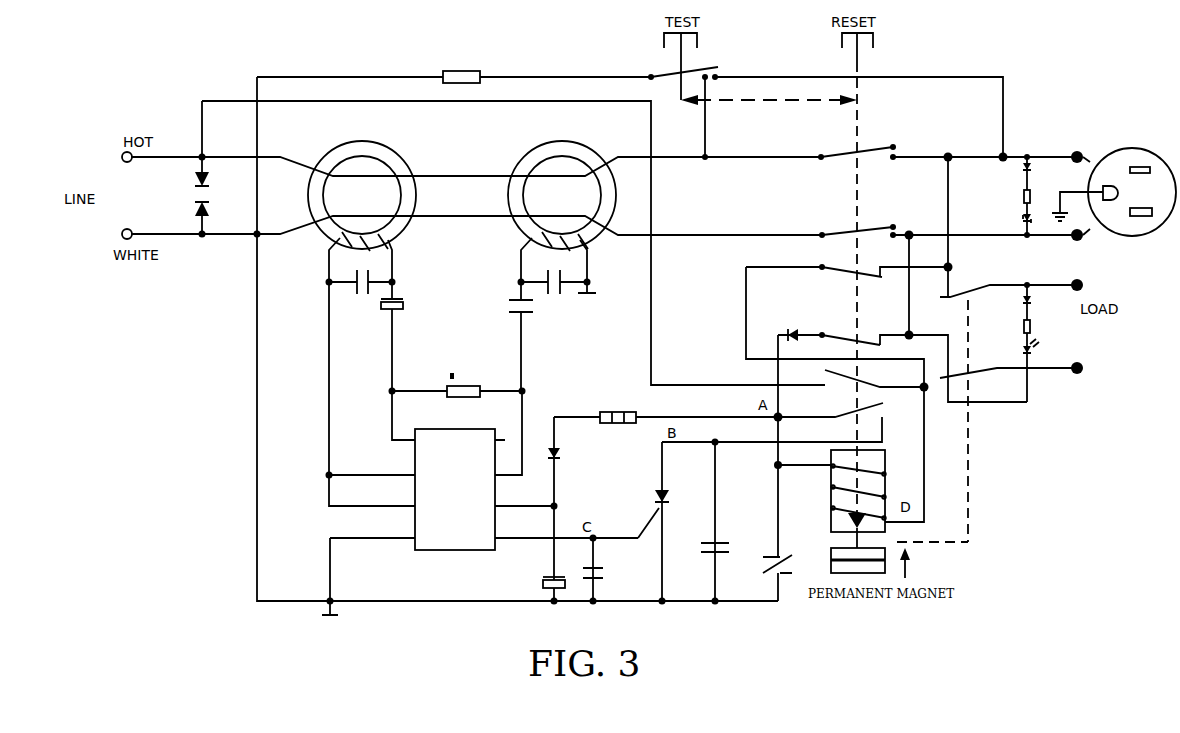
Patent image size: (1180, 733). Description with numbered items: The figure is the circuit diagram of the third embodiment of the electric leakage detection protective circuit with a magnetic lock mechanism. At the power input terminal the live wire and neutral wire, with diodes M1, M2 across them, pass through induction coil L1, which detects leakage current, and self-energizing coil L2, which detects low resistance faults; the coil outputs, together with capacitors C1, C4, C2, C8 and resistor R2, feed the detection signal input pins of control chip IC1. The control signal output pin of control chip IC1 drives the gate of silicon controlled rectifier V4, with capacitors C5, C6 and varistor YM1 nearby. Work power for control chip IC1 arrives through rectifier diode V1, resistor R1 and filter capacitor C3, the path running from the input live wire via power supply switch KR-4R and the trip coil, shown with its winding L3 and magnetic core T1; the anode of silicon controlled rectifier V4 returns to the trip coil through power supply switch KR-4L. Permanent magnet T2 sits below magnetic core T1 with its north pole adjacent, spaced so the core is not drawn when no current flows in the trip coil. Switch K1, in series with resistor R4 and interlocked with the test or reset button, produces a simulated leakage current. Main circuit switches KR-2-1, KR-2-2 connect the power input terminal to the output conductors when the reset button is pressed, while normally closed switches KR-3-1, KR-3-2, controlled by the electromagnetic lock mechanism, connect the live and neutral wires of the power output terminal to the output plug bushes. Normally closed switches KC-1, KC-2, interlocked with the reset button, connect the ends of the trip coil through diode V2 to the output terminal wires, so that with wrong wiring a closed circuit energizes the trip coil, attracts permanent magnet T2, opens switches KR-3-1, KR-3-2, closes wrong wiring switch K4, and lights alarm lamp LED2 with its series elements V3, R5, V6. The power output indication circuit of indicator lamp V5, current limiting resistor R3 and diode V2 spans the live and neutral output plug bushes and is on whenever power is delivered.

The diode M1 is at (219, 172).
The diode M2 is at (219, 217).
The resistor R4 is at (461, 67).
The switch K1 is at (699, 107).
The induction coil L1 is at (362, 188).
The self-energizing coil L2 is at (562, 188).
The capacitor C1 is at (361, 266).
The capacitor C4 is at (405, 336).
The capacitor C2 is at (557, 266).
The capacitor C8 is at (534, 336).
The resistor R2 is at (457, 383).
The control chip IC1 is at (526, 489).
The rectifier diode V1 is at (563, 511).
The filter capacitor C3 is at (540, 586).
The resistor R1 is at (666, 408).
The capacitor C5 is at (606, 570).
The silicon controlled rectifier V4 is at (644, 523).
The capacitor C6 is at (701, 523).
The metal oxide varistor YM1 (MOV) YM1 is at (766, 547).
The solenoid coil L3 (SOL) L3 is at (830, 491).
The magnetic core T1 is at (847, 517).
The permanent magnet T2 is at (846, 563).
The wrong wiring switch K4 is at (847, 394).
The power supply switch KR-4R is at (874, 375).
The power supply switch KR-4L is at (830, 419).
The normally closed switch KC-1 is at (847, 277).
The diode V2 is at (801, 328).
The normally closed switch KC-2 is at (924, 357).
The main circuit switch KR-2-1 is at (829, 148).
The main circuit switch KR-2-2 is at (829, 226).
The normally closed switch KR-3-1 is at (1011, 280).
The normally closed switch KR-3-2 is at (1011, 364).
The current limiting resistor R3 is at (1017, 197).
The power output indicator lamp V5 is at (1017, 220).
The diode V3 is at (1017, 302).
The resistor R5 is at (1017, 326).
The LED V6 (LED2) V6 is at (1038, 367).
The wrong wiring alarm lamp LED2 is at (1050, 341).